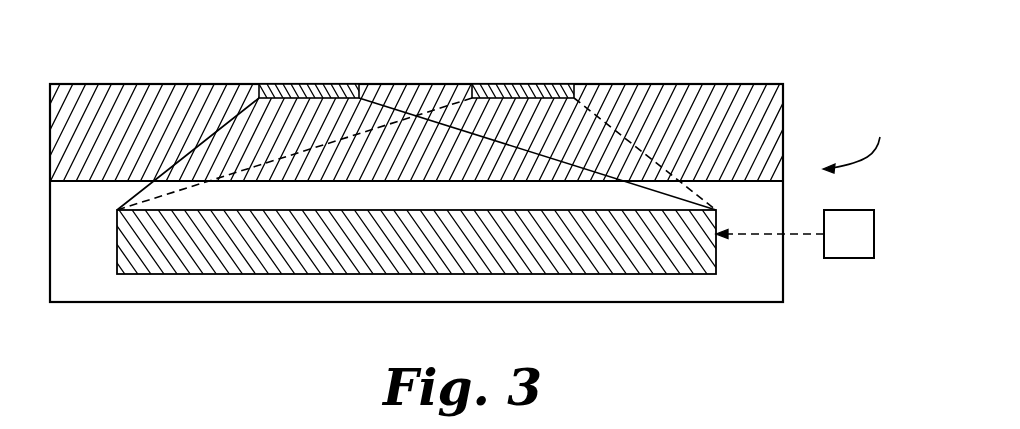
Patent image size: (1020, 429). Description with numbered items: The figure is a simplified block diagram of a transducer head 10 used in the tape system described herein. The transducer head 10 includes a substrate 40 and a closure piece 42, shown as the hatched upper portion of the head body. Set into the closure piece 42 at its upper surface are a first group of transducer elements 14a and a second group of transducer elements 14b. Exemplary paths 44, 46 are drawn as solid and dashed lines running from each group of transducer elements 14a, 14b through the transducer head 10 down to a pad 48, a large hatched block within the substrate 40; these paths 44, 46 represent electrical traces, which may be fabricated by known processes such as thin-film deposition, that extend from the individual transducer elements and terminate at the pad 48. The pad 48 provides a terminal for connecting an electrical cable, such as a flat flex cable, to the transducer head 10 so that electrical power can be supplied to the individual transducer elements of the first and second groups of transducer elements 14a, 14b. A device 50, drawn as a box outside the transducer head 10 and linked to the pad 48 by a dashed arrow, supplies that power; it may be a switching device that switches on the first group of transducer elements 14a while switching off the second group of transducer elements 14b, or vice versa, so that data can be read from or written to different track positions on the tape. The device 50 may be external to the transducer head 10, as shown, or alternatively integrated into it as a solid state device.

The transducer head 10 is at (863, 142).
The first group of transducer elements 14a is at (283, 84).
The second group of transducer elements 14b is at (555, 84).
The substrate 40 is at (785, 284).
The closure piece 42 is at (785, 107).
The path 44 is at (200, 145).
The path 46 is at (303, 153).
The pad 48 is at (716, 249).
The device 50 is at (795, 234).